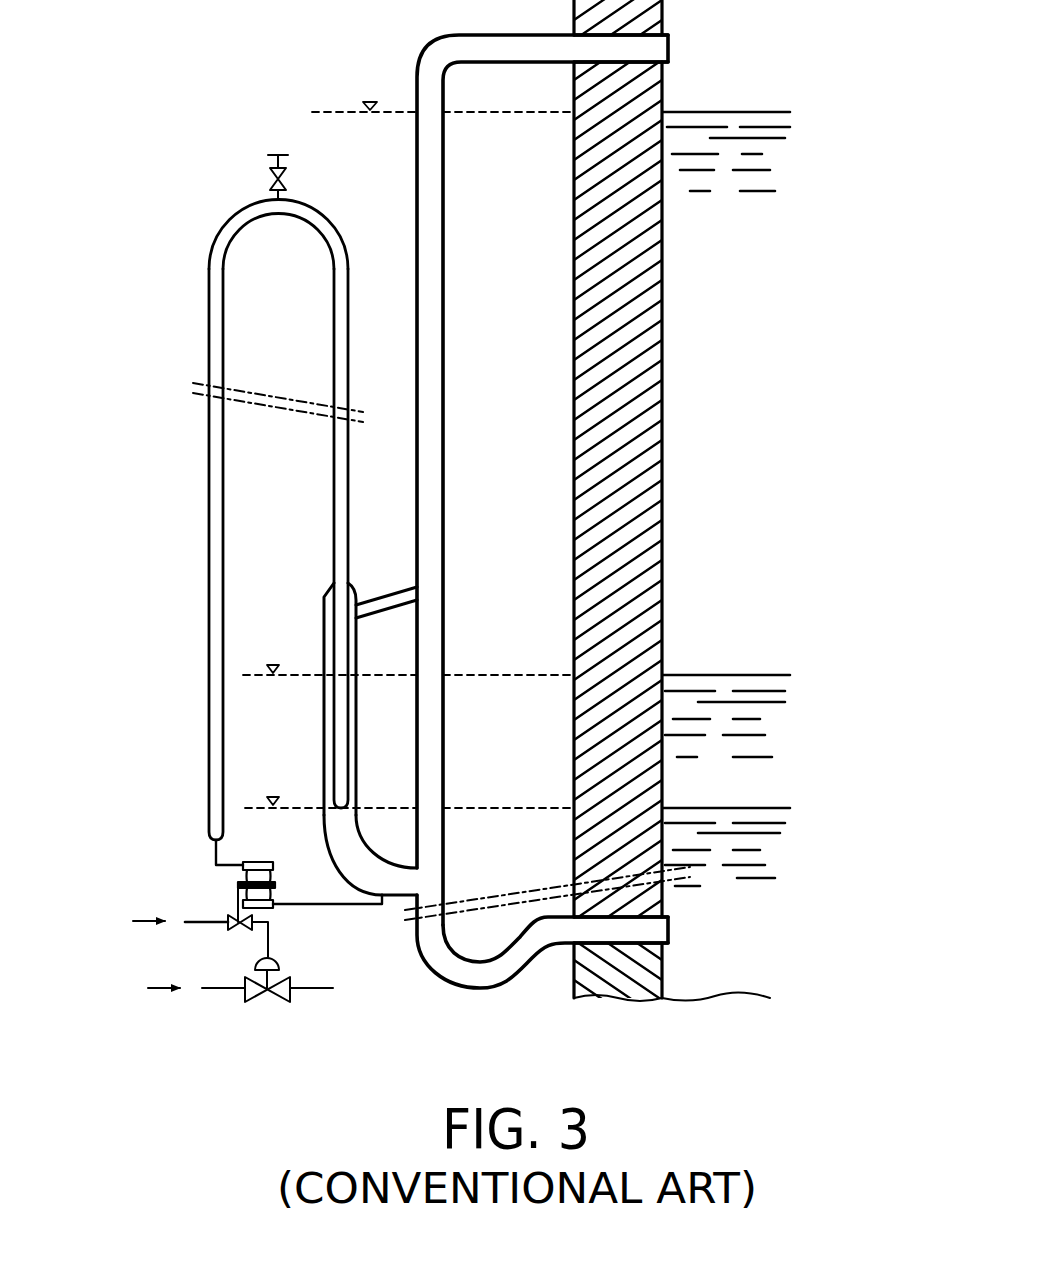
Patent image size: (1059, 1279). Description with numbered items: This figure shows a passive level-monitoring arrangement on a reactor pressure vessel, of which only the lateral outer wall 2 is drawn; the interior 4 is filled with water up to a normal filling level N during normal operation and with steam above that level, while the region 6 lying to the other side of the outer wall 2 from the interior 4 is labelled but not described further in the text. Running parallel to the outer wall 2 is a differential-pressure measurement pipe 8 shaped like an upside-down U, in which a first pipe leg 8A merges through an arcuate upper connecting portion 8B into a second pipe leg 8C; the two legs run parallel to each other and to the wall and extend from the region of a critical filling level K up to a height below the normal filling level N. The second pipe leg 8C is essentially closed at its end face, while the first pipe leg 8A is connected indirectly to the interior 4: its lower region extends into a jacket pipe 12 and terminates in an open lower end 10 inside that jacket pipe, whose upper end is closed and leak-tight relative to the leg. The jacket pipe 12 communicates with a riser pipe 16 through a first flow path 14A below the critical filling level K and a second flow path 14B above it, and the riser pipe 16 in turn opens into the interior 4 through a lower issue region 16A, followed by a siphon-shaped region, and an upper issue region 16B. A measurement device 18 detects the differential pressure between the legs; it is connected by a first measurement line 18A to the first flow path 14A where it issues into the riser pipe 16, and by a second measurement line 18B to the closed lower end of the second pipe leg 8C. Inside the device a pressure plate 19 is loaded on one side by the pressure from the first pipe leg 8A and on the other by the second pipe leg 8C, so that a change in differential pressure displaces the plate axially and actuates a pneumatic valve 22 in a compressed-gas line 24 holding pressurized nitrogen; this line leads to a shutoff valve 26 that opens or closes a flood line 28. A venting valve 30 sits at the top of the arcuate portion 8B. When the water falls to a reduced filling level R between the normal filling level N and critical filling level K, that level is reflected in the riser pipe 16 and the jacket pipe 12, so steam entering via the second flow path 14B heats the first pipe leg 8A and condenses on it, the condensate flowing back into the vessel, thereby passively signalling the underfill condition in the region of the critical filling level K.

The lateral outer wall 2 is at (602, 512).
The interior of the pressure vessel 4 is at (745, 429).
The tank interior 6 is at (514, 383).
The differential-pressure measurement pipe 8 is at (250, 520).
The first pipe leg 8A is at (350, 495).
The arcuate upper connecting portion 8B is at (280, 215).
The second pipe leg 8C is at (210, 485).
The lower end of the first pipe leg 10 is at (325, 820).
The jacket pipe 12 is at (323, 750).
The first flow path 14A is at (393, 896).
The second flow path 14B is at (378, 598).
The riser pipe 16 is at (445, 250).
The lower issue region 16A is at (668, 930).
The upper issue region 16B is at (655, 49).
The measurement device 18 is at (262, 885).
The first measurement line 18A is at (302, 905).
The second measurement line 18B is at (216, 855).
The pressure plate 19 is at (238, 885).
The pneumatic valve 22 is at (230, 928).
The compressed-gas line 24 is at (193, 920).
The shutoff valve 26 is at (263, 1008).
The flood line 28 is at (315, 990).
The venting valve 30 is at (270, 182).
The normal filling level N is at (370, 101).
The reduced filling level R is at (273, 664).
The critical filling level K is at (273, 796).